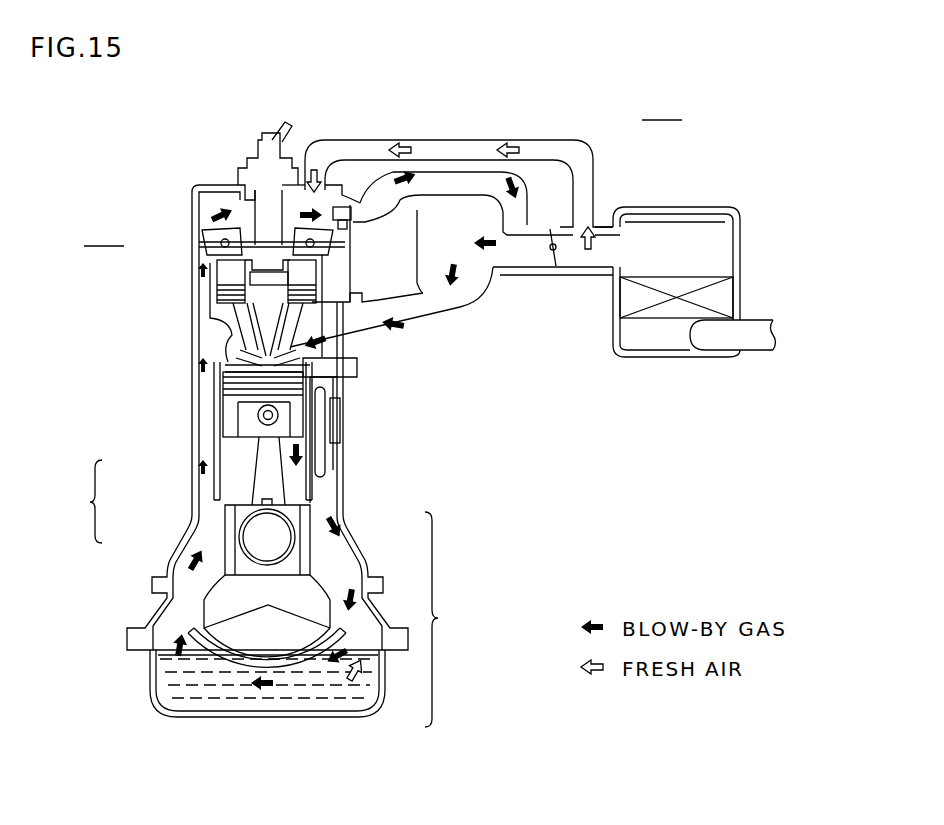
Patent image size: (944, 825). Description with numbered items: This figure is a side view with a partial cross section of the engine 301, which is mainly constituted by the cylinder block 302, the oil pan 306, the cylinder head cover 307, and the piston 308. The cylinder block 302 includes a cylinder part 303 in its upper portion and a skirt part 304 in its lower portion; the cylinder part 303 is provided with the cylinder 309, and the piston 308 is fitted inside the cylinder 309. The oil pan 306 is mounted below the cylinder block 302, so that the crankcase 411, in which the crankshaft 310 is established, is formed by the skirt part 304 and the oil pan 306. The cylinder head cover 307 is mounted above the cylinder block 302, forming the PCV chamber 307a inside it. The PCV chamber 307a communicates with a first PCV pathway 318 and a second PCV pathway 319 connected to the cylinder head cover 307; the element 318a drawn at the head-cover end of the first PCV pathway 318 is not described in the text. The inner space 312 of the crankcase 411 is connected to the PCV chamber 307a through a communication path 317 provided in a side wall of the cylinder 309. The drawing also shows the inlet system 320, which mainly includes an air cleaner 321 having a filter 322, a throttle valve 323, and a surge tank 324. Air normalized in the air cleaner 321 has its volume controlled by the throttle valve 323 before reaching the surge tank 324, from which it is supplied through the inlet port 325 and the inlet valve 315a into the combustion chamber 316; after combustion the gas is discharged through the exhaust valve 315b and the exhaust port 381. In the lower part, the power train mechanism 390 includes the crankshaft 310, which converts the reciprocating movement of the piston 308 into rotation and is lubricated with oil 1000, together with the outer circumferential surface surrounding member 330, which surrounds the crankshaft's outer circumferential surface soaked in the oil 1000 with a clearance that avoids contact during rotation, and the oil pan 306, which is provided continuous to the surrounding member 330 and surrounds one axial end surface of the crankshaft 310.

The engine 301 is at (156, 262).
The cylinder block 302 is at (76, 501).
The cylinder part 303 is at (190, 453).
The skirt part 304 is at (180, 533).
The oil pan 306 is at (152, 670).
The cylinder head cover 307 is at (215, 186).
The PCV chamber 307a is at (205, 207).
The piston 308 is at (300, 417).
The cylinder 309 is at (215, 420).
The crankshaft 310 is at (270, 530).
The inner space 312 is at (193, 682).
The inlet valve 315a is at (323, 360).
The exhaust valve 315b is at (227, 335).
The combustion chamber 316 is at (247, 372).
The communication path 317 is at (200, 302).
The first PCV pathway 318 is at (383, 205).
The PCV valve 318a is at (348, 229).
The second PCV pathway 319 is at (458, 150).
The inlet system 320 is at (644, 153).
The air cleaner 321 is at (707, 245).
The filter 322 is at (718, 295).
The throttle valve 323 is at (556, 268).
The surge tank 324 is at (465, 257).
The inlet port 325 is at (337, 335).
The outer circumferential surface surrounding member 330 is at (278, 670).
The exhaust port 381 is at (225, 333).
The power train mechanism 390 is at (355, 672).
The crankcase 411 is at (451, 619).
The oil 1000 is at (217, 687).